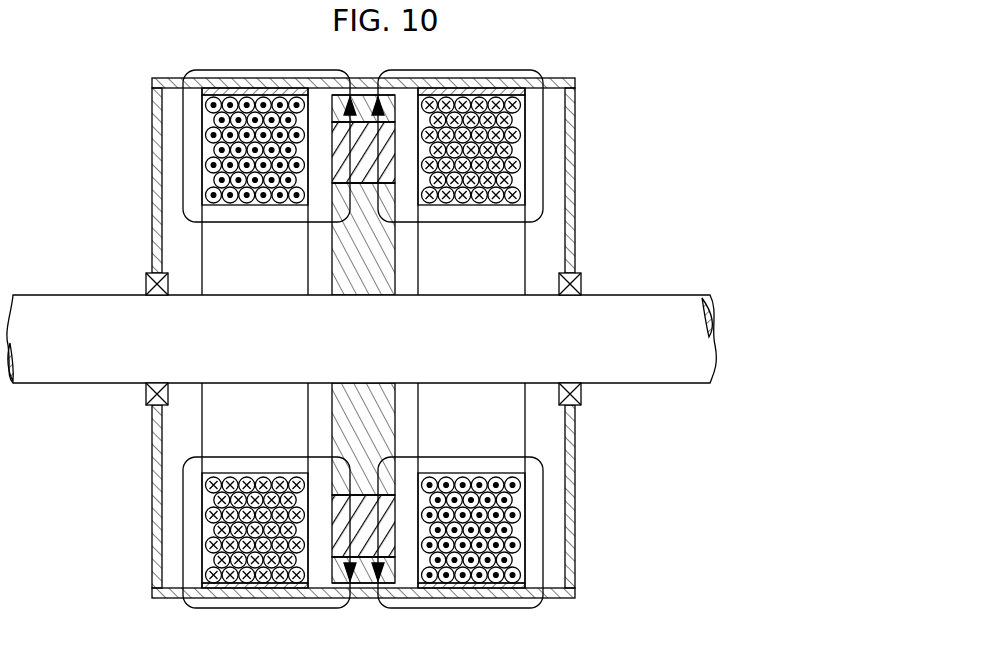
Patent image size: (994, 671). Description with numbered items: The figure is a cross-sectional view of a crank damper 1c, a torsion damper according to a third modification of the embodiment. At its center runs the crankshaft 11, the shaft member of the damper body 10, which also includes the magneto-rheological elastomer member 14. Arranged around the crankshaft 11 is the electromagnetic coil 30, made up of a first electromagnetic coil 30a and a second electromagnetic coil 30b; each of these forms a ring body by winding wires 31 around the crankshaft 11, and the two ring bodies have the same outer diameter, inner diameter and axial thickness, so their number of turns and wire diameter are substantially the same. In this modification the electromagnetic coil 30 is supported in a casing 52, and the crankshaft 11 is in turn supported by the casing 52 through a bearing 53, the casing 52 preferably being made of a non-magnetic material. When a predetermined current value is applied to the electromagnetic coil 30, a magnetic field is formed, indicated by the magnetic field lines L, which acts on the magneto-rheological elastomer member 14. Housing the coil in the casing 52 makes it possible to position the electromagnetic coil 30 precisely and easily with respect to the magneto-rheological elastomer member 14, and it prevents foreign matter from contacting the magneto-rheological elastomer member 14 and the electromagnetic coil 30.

The crank damper 1c is at (374, 340).
The damper body 10 is at (367, 250).
The crankshaft 11 is at (639, 295).
The magneto-rheological elastomer member 14 is at (368, 150).
The electromagnetic coil 30 is at (363, 339).
The first electromagnetic coil 30a is at (202, 423).
The second electromagnetic coil 30b is at (525, 418).
The wires 31 is at (200, 107).
The casing 52 is at (577, 186).
The bearing 53 is at (143, 393).
The magnetic field lines L is at (182, 163).